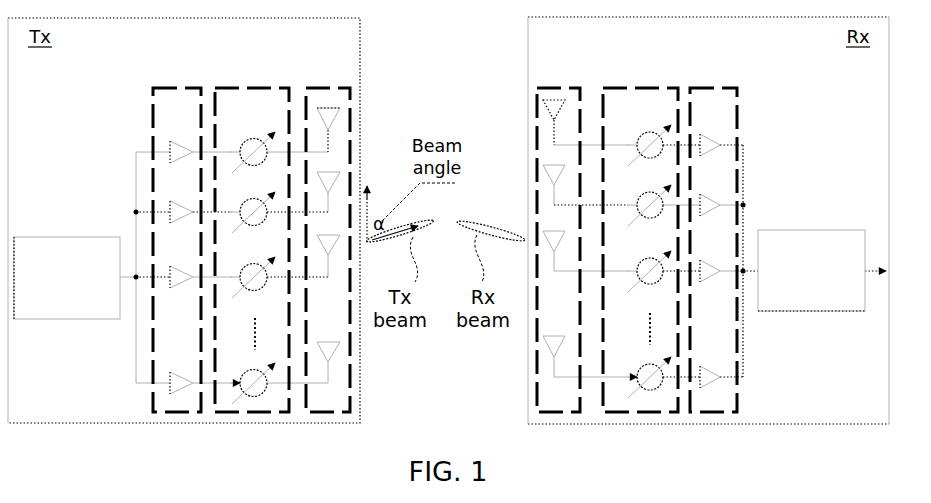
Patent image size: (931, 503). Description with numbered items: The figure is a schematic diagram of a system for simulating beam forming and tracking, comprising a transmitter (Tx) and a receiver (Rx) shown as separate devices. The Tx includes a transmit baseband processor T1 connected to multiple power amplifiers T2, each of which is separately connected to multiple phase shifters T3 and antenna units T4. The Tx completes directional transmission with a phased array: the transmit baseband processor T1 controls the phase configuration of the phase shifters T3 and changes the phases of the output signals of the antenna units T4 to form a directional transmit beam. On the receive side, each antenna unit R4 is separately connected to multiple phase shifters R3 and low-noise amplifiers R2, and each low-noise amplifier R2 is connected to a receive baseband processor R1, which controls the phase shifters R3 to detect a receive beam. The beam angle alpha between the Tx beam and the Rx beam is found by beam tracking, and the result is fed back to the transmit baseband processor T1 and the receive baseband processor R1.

The transmit baseband processor T1 is at (70, 237).
The power amplifiers T2 is at (183, 88).
The phase shifters T3 is at (258, 88).
The antenna units T4 is at (333, 88).
The receive baseband processor R1 is at (815, 230).
The low-noise amplifiers R2 is at (722, 88).
The phase shifters R3 is at (647, 88).
The antenna units R4 is at (568, 88).